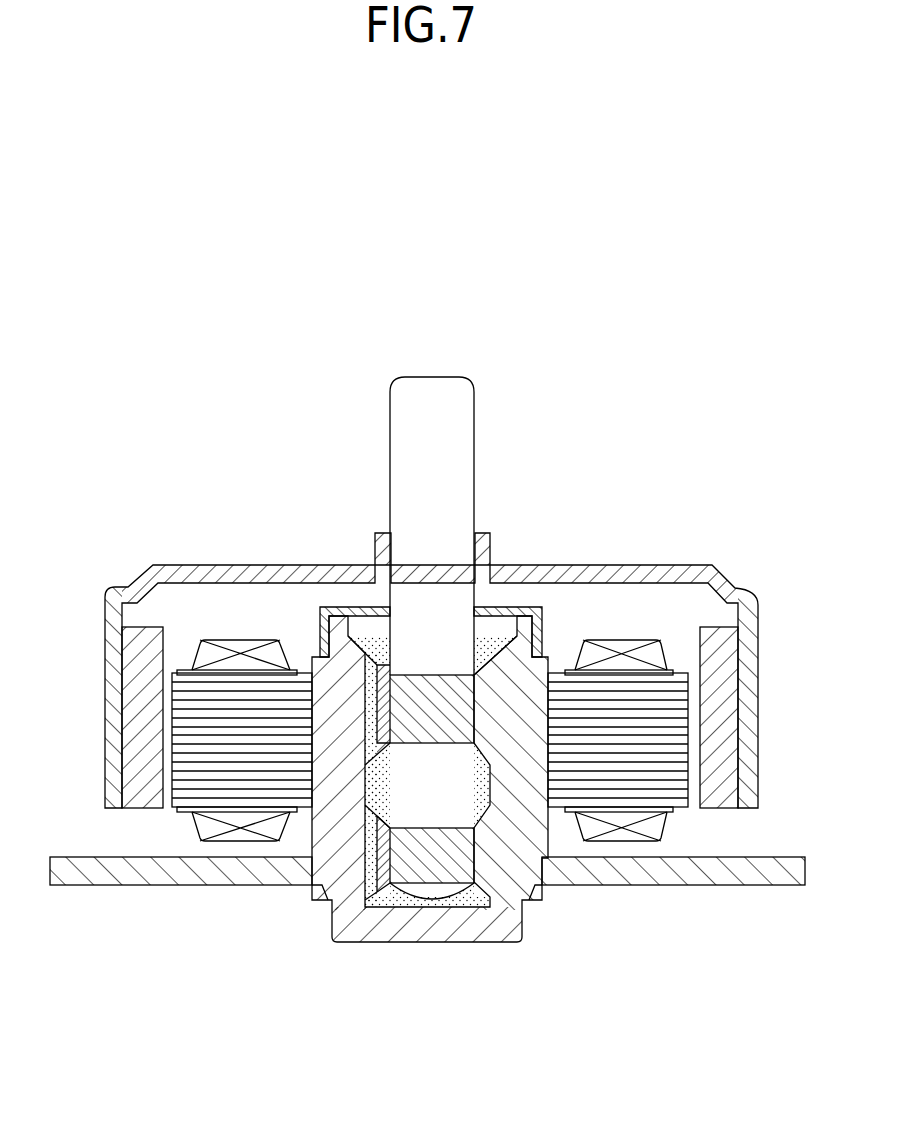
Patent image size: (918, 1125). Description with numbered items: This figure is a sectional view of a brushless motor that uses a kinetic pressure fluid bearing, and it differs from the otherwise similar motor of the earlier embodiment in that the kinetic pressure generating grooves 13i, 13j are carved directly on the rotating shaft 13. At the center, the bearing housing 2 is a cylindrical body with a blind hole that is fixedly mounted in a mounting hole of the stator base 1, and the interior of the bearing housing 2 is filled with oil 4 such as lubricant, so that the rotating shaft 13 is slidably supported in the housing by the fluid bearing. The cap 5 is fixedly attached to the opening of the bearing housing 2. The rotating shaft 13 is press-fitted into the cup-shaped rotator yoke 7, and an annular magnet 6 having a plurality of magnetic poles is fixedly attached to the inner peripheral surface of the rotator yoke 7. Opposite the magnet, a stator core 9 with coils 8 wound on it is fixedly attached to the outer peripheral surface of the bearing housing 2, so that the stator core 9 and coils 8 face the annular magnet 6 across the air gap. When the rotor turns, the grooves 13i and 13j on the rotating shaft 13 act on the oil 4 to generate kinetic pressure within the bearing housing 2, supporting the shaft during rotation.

The stator base 1 is at (187, 877).
The bearing housing 2 is at (517, 897).
The oil 4 is at (378, 650).
The cap 5 is at (322, 610).
The annular magnet 6 is at (137, 637).
The rotator yoke 7 is at (105, 700).
The coils 8 is at (620, 642).
The stator core 9 is at (662, 698).
The rotating shaft 13 is at (488, 391).
The kinetic pressure generating groove 13i is at (432, 683).
The kinetic pressure generating groove 13j is at (425, 860).